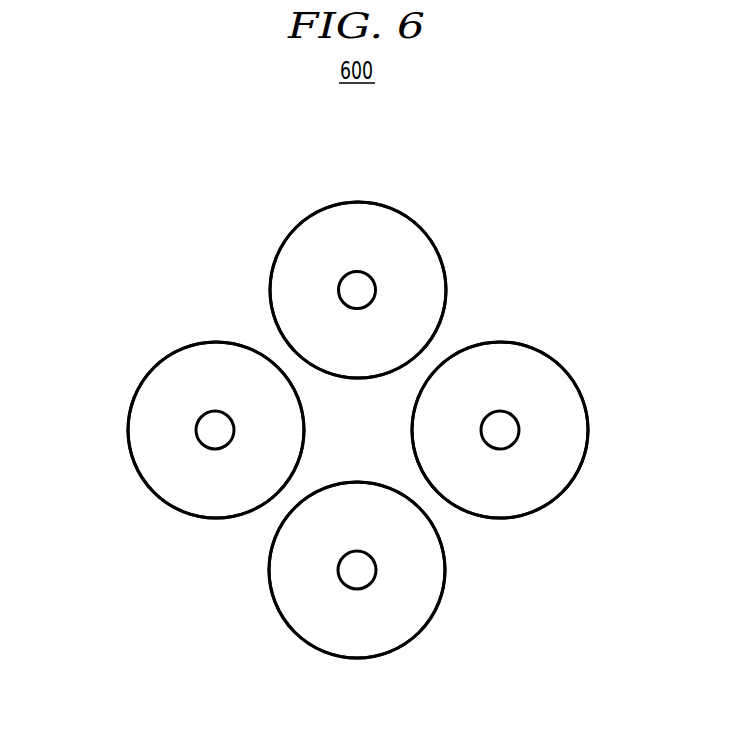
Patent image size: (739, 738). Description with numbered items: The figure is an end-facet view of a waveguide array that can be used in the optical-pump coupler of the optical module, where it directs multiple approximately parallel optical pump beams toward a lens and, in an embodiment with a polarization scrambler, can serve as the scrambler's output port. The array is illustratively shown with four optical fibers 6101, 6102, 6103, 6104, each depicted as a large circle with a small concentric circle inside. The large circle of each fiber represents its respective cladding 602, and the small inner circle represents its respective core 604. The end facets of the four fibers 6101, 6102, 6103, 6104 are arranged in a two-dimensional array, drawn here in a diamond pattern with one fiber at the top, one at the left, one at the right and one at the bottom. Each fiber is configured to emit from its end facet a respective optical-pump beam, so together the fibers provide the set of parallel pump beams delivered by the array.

The cladding 602 is at (412, 265).
The core 604 is at (360, 296).
The optical fiber 6101 is at (137, 430).
The optical fiber 6102 is at (359, 202).
The optical fiber 6103 is at (575, 381).
The optical fiber 6104 is at (445, 590).